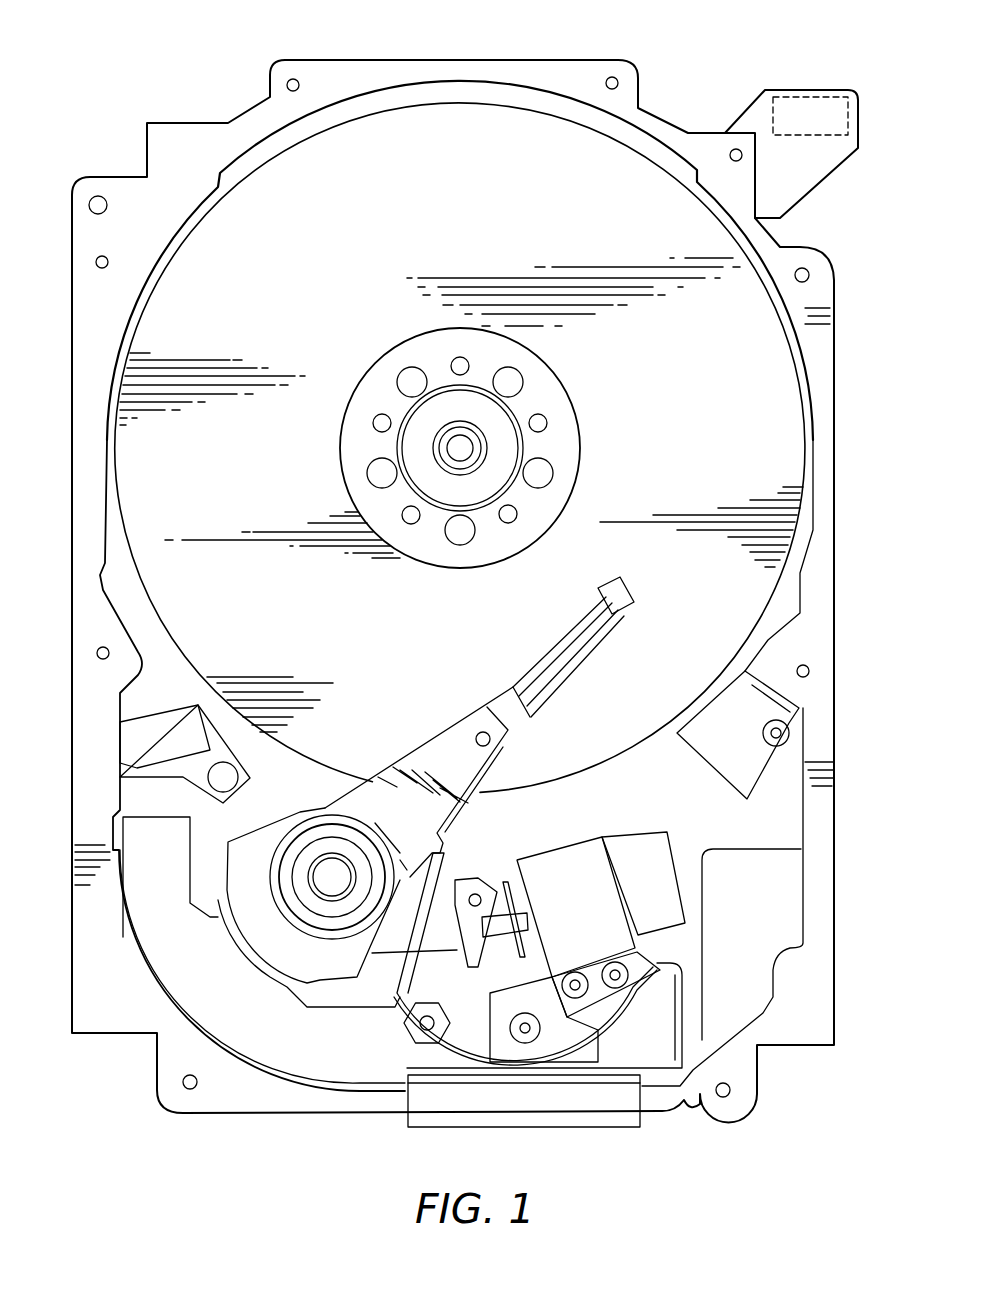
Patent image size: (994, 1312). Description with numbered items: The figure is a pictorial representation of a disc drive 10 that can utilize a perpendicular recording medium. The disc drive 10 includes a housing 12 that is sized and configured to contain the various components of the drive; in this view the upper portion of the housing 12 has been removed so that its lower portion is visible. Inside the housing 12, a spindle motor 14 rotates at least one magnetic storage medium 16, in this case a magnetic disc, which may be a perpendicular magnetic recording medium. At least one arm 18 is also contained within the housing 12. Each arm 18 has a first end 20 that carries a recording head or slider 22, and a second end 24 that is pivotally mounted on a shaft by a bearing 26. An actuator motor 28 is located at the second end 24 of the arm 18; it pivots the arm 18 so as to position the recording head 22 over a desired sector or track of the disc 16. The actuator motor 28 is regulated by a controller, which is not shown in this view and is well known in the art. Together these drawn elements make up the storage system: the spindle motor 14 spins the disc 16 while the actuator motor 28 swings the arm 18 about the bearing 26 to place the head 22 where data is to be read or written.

The disc drive 10 is at (122, 106).
The housing 12 is at (591, 72).
The spindle motor 14 is at (456, 452).
The magnetic storage medium 16 is at (372, 241).
The arm 18 is at (447, 752).
The first end 20 is at (567, 633).
The recording head 22 is at (638, 592).
The second end 24 is at (357, 810).
The bearing 26 is at (323, 868).
The actuator motor 28 is at (225, 1003).